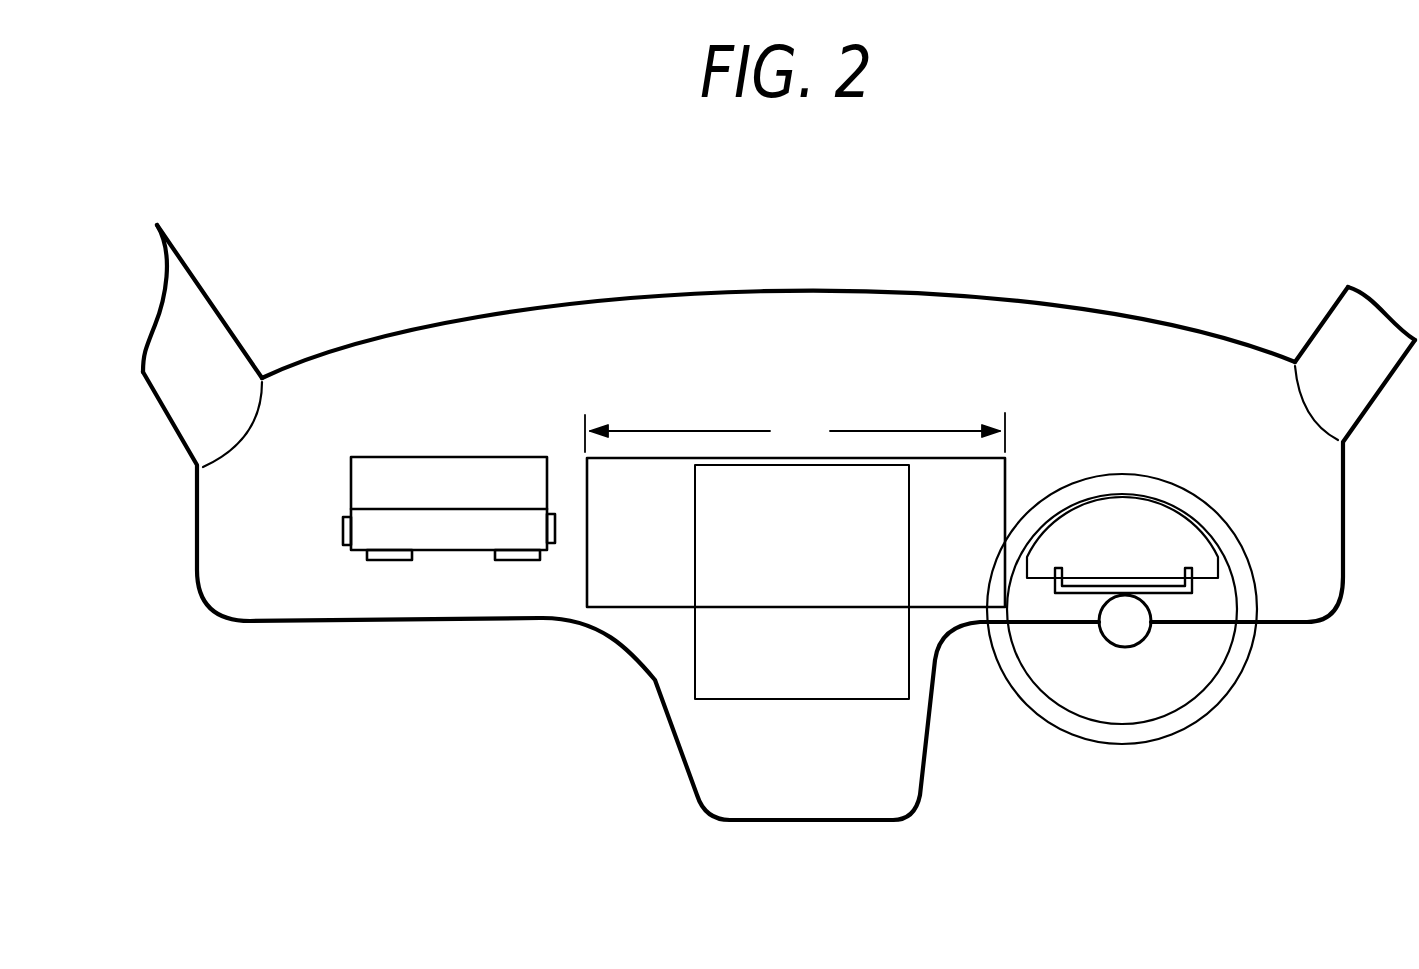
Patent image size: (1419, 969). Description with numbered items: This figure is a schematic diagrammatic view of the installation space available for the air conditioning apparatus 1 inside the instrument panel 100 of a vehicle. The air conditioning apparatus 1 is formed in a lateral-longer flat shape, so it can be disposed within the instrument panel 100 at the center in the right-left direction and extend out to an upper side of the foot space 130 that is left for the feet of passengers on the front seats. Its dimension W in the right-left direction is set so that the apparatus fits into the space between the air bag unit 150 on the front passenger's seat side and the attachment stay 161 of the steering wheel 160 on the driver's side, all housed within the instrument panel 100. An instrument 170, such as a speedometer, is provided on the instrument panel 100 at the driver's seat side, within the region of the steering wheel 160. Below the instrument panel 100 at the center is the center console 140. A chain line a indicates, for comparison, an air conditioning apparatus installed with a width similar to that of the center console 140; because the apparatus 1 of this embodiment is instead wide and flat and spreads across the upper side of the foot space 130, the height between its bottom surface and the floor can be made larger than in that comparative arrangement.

The instrument panel 100 is at (603, 298).
The air conditioning apparatus 1 is at (935, 458).
The dimension in the right-left direction W is at (795, 432).
The air bag unit 150 is at (425, 455).
The foot space 130 is at (639, 680).
The center console 140 is at (810, 785).
The steering wheel 160 is at (1213, 707).
The attachment stay 161 is at (1178, 595).
The instrument 170 is at (1130, 527).
The chain line a is at (877, 700).